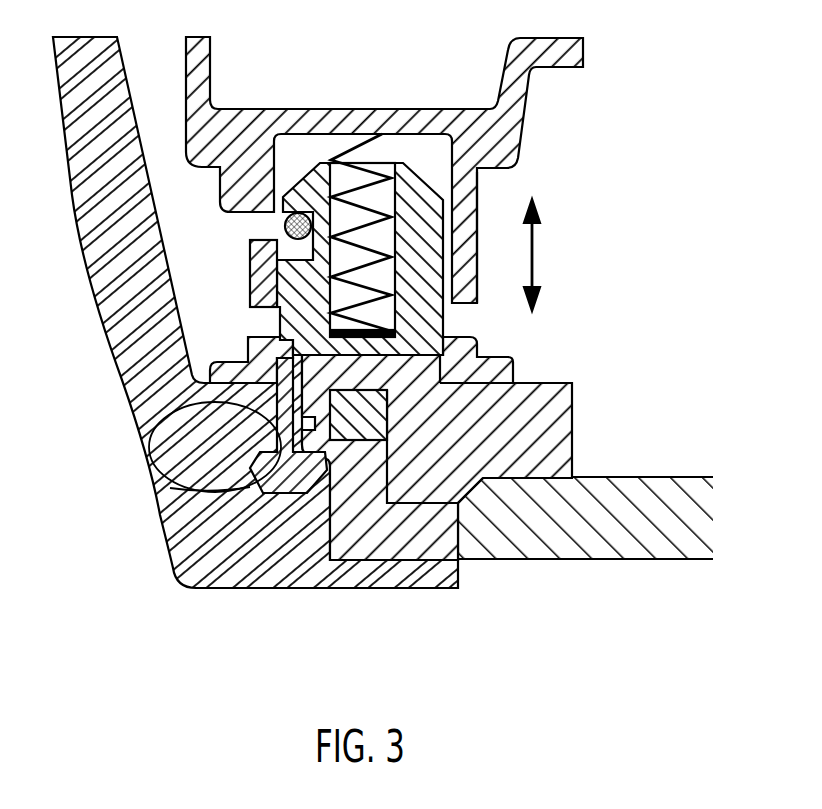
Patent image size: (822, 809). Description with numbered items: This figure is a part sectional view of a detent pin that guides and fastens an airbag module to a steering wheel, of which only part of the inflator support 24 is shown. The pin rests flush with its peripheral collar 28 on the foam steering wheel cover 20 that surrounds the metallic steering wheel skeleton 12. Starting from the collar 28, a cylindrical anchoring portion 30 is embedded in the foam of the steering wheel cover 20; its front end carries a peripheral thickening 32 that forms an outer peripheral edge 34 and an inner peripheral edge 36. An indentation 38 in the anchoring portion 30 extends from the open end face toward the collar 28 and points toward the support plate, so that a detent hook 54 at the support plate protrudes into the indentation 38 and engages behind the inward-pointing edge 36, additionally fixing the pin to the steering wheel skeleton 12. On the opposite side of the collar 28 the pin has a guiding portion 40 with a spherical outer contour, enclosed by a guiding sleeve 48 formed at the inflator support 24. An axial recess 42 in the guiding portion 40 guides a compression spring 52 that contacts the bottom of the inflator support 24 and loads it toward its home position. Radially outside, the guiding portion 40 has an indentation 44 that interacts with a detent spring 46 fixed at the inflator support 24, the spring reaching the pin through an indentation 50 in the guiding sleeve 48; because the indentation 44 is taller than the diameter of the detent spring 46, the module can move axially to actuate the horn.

The steering wheel skeleton 12 is at (568, 561).
The steering wheel cover 20 is at (168, 552).
The inflator support 24 is at (250, 100).
The peripheral collar 28 is at (494, 358).
The anchoring portion 30 is at (152, 430).
The peripheral thickening 32 is at (284, 494).
The outer peripheral edge 34 is at (172, 488).
The inner peripheral edge 36 is at (383, 503).
The indentation 38 is at (448, 385).
The guiding portion 40 is at (453, 232).
The axial recess 42 is at (392, 160).
The indentation 44 is at (262, 264).
The detent spring 46 is at (285, 226).
The guiding sleeve 48 is at (478, 267).
The indentation 50 is at (228, 218).
The compression spring 52 is at (371, 160).
The detent hook 54 is at (385, 438).